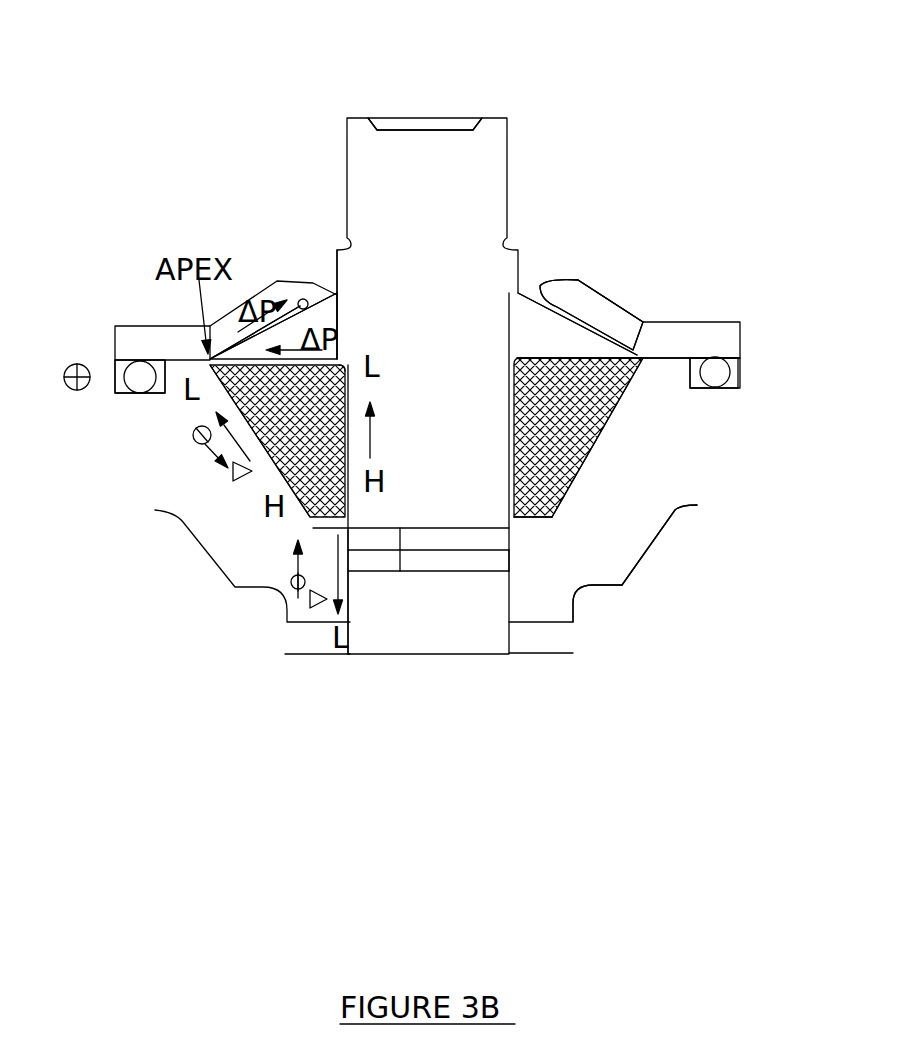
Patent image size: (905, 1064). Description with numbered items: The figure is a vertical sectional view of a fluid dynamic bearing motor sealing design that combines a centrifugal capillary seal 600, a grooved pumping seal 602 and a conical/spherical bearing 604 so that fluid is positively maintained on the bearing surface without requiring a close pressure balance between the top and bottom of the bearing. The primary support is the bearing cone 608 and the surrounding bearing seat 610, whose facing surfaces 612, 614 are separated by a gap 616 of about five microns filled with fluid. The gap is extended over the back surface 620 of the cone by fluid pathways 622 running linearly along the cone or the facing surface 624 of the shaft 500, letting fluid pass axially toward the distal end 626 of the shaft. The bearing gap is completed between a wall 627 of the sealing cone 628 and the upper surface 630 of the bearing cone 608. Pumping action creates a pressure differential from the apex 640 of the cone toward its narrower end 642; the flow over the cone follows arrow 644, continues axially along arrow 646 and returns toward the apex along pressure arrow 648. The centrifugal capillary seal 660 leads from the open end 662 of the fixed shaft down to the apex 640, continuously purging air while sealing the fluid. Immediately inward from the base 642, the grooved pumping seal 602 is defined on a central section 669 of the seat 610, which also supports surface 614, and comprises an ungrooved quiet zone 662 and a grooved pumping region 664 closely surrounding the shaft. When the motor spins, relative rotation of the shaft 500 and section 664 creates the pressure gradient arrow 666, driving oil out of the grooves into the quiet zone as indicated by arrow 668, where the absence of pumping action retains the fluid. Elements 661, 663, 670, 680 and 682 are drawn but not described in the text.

The shaft 500 is at (508, 175).
The distal end 626 is at (436, 150).
The centrifugal capillary seal 600 is at (649, 297).
The grooved pumping seal 602 is at (549, 599).
The conical/spherical bearing 604 is at (694, 440).
The bearing cone 608 is at (606, 428).
The bearing seat 610 is at (697, 503).
The facing surface 612 is at (624, 392).
The facing surface 614 is at (587, 462).
The gap 616 is at (712, 330).
The back surface 620 is at (347, 408).
The fluid pathways 622 is at (347, 470).
The facing surface of the shaft 624 is at (345, 360).
The wall 627 is at (337, 335).
The sealing cone 628 is at (335, 307).
The upper surface 630 is at (227, 387).
The apex 640 is at (251, 276).
The narrower end 642 is at (312, 530).
The arrow 644 is at (195, 442).
The arrow 646 is at (373, 438).
The pressure arrow 648 is at (310, 301).
The centrifugal capillary seal 660 is at (572, 313).
The flap seal upper surface 661 is at (613, 307).
The open end 662 is at (532, 282).
The shaft lip surface 663 is at (643, 320).
The grooved pumping region 664 is at (470, 600).
The pressure gradient arrow 666 is at (324, 607).
The arrow 668 is at (150, 343).
The central section 669 is at (530, 562).
The lip seal inner line 670 is at (260, 292).
The direction indicator 680 is at (52, 393).
The O-ring 682 is at (137, 387).